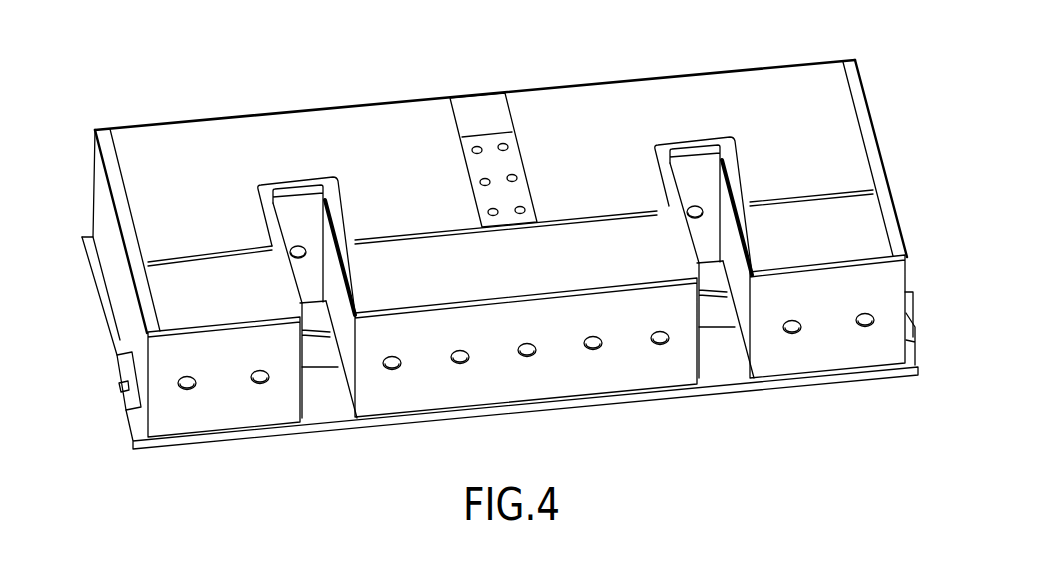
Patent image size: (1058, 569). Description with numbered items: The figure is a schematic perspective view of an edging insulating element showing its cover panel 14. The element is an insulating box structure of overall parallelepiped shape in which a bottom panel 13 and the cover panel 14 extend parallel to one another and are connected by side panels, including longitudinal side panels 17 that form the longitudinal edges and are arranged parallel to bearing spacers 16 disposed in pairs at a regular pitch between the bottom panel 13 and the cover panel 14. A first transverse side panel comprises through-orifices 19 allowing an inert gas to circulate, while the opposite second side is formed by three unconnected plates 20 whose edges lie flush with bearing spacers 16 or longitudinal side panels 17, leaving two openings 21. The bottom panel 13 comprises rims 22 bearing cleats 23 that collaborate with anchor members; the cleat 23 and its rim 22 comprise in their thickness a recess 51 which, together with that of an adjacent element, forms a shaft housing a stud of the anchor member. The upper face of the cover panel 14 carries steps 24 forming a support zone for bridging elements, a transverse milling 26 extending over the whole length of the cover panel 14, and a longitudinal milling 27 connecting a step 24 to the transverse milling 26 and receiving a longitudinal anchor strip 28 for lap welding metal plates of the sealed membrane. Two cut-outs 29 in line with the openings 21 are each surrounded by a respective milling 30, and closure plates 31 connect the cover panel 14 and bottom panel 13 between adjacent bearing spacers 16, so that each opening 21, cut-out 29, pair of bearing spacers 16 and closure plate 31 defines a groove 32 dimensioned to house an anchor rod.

The bottom panel 13 is at (334, 400).
The cover panel 14 is at (873, 224).
The bearing spacers 16 is at (343, 332).
The longitudinal side panels 17 is at (118, 263).
The through-orifices 19 is at (524, 356).
The plates 20 is at (207, 402).
The openings 21 is at (318, 377).
The rims 22 is at (103, 305).
The cleats 23 is at (917, 340).
The steps 24 is at (105, 138).
The transverse milling 26 is at (878, 246).
The longitudinal milling 27 is at (478, 120).
The longitudinal anchor strip 28 is at (500, 167).
The cut-outs 29 is at (288, 227).
The milling 30 is at (322, 178).
The closure plates 31 is at (278, 197).
The grooves 32 is at (290, 284).
The recess 51 is at (123, 395).